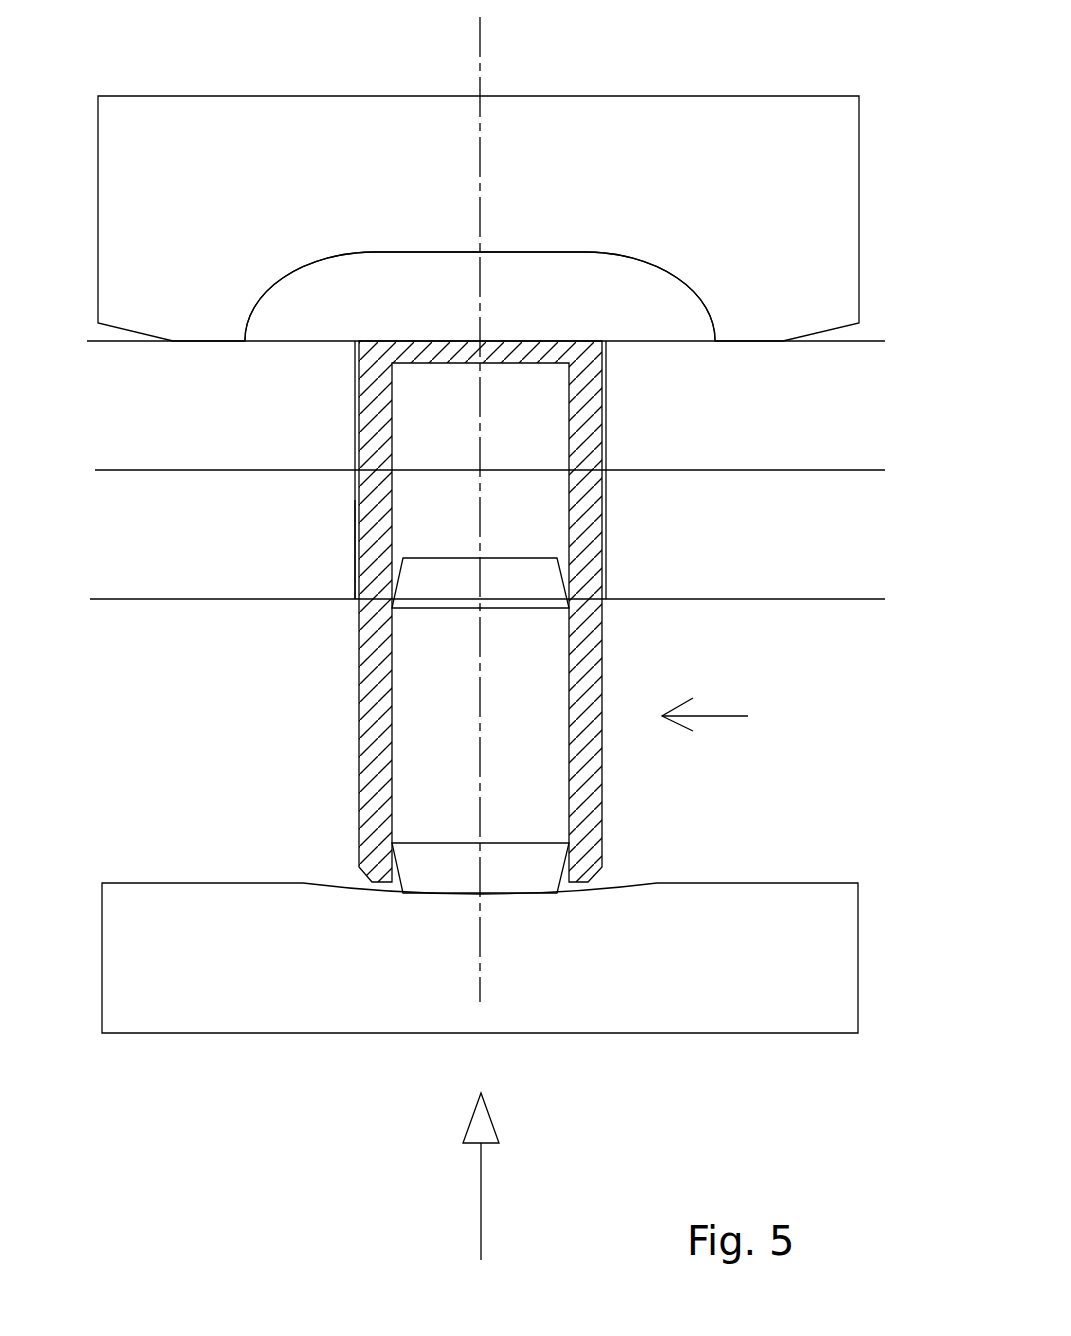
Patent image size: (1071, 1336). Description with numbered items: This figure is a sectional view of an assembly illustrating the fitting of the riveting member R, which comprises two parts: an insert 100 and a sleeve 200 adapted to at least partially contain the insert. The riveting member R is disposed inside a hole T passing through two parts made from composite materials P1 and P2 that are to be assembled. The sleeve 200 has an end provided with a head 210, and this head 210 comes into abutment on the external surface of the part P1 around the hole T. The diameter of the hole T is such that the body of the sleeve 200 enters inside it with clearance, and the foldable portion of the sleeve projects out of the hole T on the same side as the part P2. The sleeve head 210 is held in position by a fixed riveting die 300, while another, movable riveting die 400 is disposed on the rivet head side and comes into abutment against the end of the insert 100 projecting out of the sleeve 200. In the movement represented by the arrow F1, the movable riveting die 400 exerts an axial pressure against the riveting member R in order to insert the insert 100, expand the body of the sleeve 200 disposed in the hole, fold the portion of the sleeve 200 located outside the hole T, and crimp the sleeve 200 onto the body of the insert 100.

The insert 100 is at (537, 799).
The sleeve 200 is at (528, 611).
The head 210 is at (480, 171).
The fixed riveting die 300 is at (478, 172).
The movable riveting die 400 is at (480, 985).
The first part made from composite material P1 is at (111, 395).
The second part made from composite material P2 is at (188, 577).
The hole T is at (356, 572).
The riveting member R is at (726, 710).
The arrow representing the movement of the movable riveting die F1 is at (517, 1176).